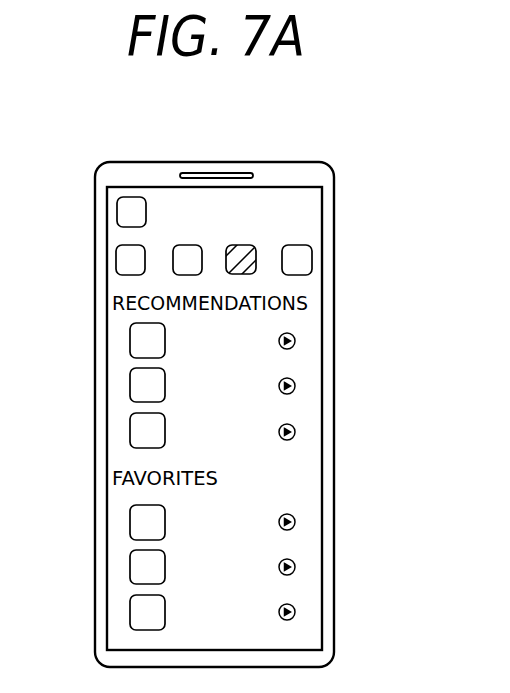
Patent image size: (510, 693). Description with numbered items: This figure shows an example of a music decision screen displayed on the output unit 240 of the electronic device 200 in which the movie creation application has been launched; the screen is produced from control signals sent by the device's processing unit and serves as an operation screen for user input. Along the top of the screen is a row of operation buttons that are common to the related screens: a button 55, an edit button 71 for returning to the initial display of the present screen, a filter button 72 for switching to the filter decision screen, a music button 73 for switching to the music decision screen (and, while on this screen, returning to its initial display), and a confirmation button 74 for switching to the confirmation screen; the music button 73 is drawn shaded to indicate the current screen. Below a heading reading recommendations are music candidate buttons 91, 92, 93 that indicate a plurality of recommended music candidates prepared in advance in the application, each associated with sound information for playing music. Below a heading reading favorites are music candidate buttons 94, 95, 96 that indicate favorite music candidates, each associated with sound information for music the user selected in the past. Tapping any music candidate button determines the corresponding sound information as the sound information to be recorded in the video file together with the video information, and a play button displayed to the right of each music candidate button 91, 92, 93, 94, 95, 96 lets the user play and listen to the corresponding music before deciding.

The electronic device 200 is at (287, 168).
The output unit 240 is at (318, 220).
The icon 55 is at (127, 214).
The edit button 71 is at (127, 258).
The filter button 72 is at (187, 250).
The music button 73 is at (240, 249).
The confirmation button 74 is at (292, 249).
The music candidate button 91 is at (147, 342).
The music candidate button 92 is at (148, 387).
The music candidate button 93 is at (148, 433).
The music candidate button 94 is at (148, 525).
The music candidate button 95 is at (150, 570).
The music candidate button 96 is at (150, 615).